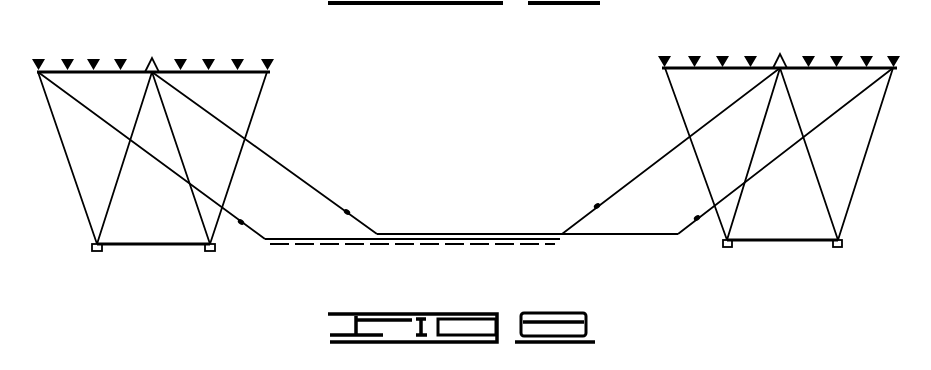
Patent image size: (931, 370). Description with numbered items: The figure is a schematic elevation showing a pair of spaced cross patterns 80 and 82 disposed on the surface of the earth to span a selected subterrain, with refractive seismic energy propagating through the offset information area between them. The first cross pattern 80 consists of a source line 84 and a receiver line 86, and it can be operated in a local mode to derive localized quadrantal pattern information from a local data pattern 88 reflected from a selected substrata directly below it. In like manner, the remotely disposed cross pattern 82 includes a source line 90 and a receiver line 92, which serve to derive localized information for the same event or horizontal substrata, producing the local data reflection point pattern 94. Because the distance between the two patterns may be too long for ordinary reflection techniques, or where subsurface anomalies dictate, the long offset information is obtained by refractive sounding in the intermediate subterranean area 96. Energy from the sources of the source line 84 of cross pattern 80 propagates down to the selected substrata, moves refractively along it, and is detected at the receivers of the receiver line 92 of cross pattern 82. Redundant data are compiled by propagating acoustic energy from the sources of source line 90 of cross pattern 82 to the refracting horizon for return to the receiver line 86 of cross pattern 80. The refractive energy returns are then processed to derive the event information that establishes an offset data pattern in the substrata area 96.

The cross pattern 80 is at (213, 40).
The remotely disposed cross pattern 82 is at (837, 36).
The source line 84 is at (246, 74).
The receiver line 86 is at (152, 74).
The local data pattern 88 is at (140, 248).
The source line 90 is at (736, 70).
The receiver line 92 is at (783, 71).
The local data reflection point pattern 94 is at (774, 242).
The intermediate subterranean area 96 is at (555, 255).